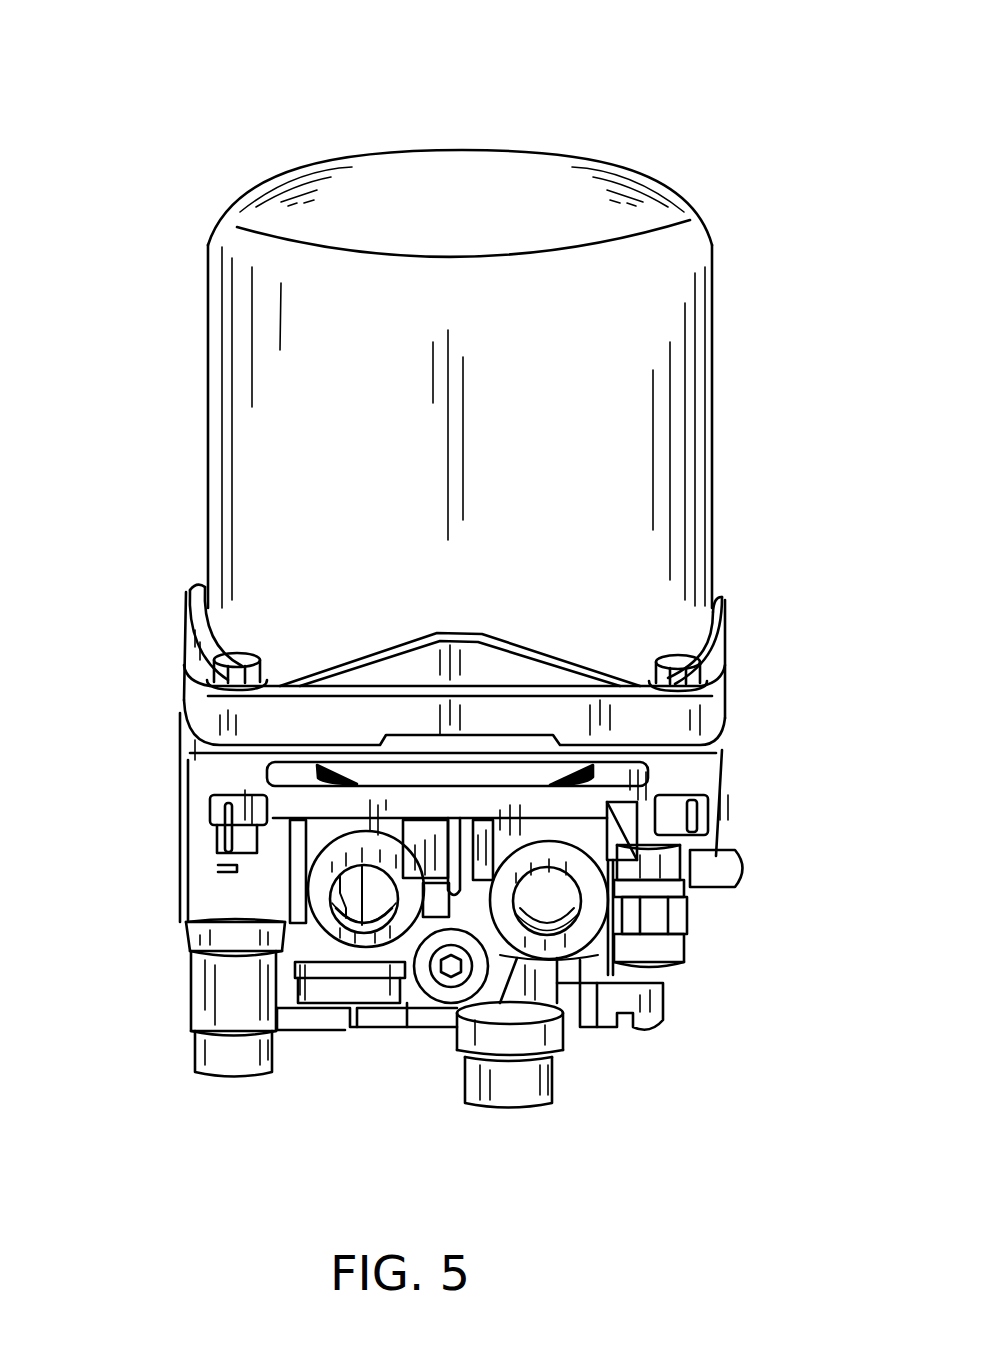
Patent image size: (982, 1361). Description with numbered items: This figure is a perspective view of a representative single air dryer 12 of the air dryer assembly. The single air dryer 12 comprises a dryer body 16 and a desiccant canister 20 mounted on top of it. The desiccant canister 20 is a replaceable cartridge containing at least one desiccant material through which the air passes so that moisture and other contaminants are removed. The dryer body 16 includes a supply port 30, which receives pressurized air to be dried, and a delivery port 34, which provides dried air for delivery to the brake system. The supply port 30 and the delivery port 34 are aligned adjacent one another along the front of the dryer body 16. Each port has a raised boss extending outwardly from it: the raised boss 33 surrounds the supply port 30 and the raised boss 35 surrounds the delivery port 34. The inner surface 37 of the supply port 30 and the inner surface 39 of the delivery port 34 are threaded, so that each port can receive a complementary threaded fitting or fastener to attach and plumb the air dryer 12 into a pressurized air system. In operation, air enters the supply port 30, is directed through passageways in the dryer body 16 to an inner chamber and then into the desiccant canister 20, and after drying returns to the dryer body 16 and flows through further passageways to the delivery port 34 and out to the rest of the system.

The single air dryer 12 is at (530, 116).
The desiccant canister 20 is at (219, 382).
The dryer body 16 is at (210, 765).
The raised boss 33 is at (353, 842).
The raised boss 35 is at (558, 846).
The inner surface 37 is at (362, 928).
The supply port 30 is at (377, 905).
The inner surface 39 is at (540, 938).
The delivery port 34 is at (555, 900).